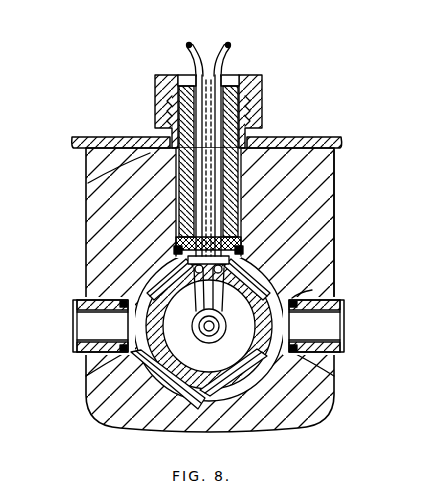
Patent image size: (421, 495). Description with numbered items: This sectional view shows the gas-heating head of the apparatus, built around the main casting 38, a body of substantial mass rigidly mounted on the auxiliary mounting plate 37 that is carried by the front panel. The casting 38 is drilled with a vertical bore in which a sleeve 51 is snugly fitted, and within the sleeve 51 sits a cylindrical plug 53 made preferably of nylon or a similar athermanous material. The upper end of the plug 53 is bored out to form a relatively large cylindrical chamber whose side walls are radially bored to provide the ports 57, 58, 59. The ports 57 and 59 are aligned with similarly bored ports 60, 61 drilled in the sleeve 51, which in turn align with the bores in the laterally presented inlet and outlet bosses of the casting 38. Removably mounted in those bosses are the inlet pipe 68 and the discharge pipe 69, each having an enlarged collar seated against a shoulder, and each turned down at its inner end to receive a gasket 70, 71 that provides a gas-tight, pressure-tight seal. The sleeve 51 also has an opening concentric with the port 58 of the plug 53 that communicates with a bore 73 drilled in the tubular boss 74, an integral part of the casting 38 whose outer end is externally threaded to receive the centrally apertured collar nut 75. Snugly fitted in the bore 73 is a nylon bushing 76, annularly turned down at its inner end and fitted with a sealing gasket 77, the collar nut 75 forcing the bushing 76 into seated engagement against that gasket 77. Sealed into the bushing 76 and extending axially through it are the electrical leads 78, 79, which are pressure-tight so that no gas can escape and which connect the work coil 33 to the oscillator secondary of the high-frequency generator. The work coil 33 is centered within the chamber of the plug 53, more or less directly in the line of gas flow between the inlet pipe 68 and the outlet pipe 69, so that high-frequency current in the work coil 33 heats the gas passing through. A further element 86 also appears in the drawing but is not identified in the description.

The work coil 33 is at (220, 327).
The auxiliary mounting plate 37 is at (336, 138).
The main casting 38 is at (328, 209).
The sleeve 51 is at (149, 396).
The cylindrical plug 53 is at (197, 407).
The port 57 is at (157, 332).
The port 58 is at (170, 285).
The port 59 is at (247, 285).
The port 60 is at (130, 329).
The port 61 is at (343, 329).
The inlet pipe 68 is at (73, 309).
The discharge pipe 69 is at (350, 300).
The gasket 70 is at (90, 373).
The gasket 71 is at (296, 296).
The bore 73 is at (90, 181).
The tubular boss 74 is at (280, 143).
The collar nut 75 is at (260, 90).
The nylon bushing 76 is at (179, 96).
The sealing gasket 77 is at (246, 250).
The electrical lead 78 is at (192, 40).
The electrical lead 79 is at (230, 47).
The pin 86 is at (209, 337).